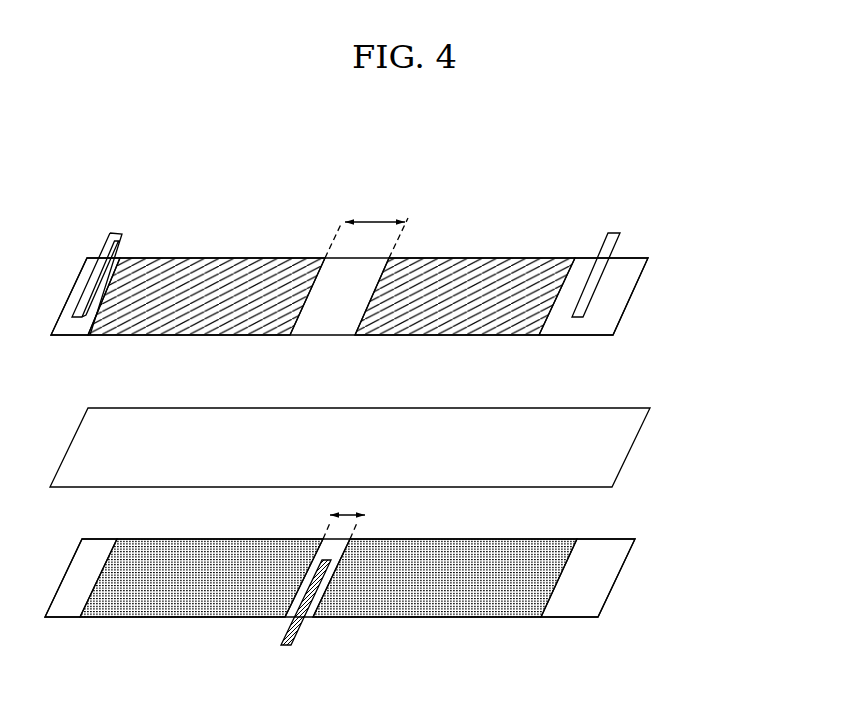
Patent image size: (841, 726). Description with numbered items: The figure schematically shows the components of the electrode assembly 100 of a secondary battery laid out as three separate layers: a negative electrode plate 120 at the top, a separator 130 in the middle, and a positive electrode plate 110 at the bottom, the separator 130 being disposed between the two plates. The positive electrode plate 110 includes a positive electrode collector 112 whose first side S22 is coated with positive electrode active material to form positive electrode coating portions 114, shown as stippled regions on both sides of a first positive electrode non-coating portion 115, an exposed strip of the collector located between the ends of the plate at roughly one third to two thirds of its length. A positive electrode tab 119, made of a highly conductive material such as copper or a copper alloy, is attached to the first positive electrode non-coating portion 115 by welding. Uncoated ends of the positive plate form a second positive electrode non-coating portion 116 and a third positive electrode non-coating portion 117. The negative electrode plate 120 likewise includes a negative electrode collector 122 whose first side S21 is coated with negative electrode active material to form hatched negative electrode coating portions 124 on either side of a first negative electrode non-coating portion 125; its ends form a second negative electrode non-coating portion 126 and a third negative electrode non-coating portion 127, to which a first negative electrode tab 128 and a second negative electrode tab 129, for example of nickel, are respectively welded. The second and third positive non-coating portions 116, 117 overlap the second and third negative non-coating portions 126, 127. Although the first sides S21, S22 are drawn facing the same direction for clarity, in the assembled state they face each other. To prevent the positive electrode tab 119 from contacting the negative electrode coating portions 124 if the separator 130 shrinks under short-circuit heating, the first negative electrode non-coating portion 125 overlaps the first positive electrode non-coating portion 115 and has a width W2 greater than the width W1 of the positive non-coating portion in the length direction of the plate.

The electrode assembly 100 is at (667, 183).
The positive electrode plate 110 is at (690, 557).
The positive electrode collector 112 is at (620, 579).
The positive electrode coating portions 114 is at (185, 607).
The first positive electrode non-coating portion 115 is at (313, 610).
The second positive electrode non-coating portion 116 is at (65, 605).
The third positive electrode non-coating portion 117 is at (572, 608).
The positive electrode tab 119 is at (283, 647).
The negative electrode plate 120 is at (690, 273).
The negative electrode collector 122 is at (633, 297).
The negative electrode coating portions 124 is at (230, 265).
The first negative electrode non-coating portion 125 is at (322, 327).
The second negative electrode non-coating portion 126 is at (65, 327).
The third negative electrode non-coating portion 127 is at (577, 328).
The first negative electrode tab 128 is at (118, 232).
The second negative electrode tab 129 is at (615, 232).
The separator 130 is at (690, 457).
The first side of the negative electrode collector S21 is at (620, 272).
The first side of the positive electrode collector S22 is at (86, 570).
The width of the first positive electrode non-coating portion W1 is at (347, 506).
The width of the first negative electrode non-coating portion W2 is at (375, 210).